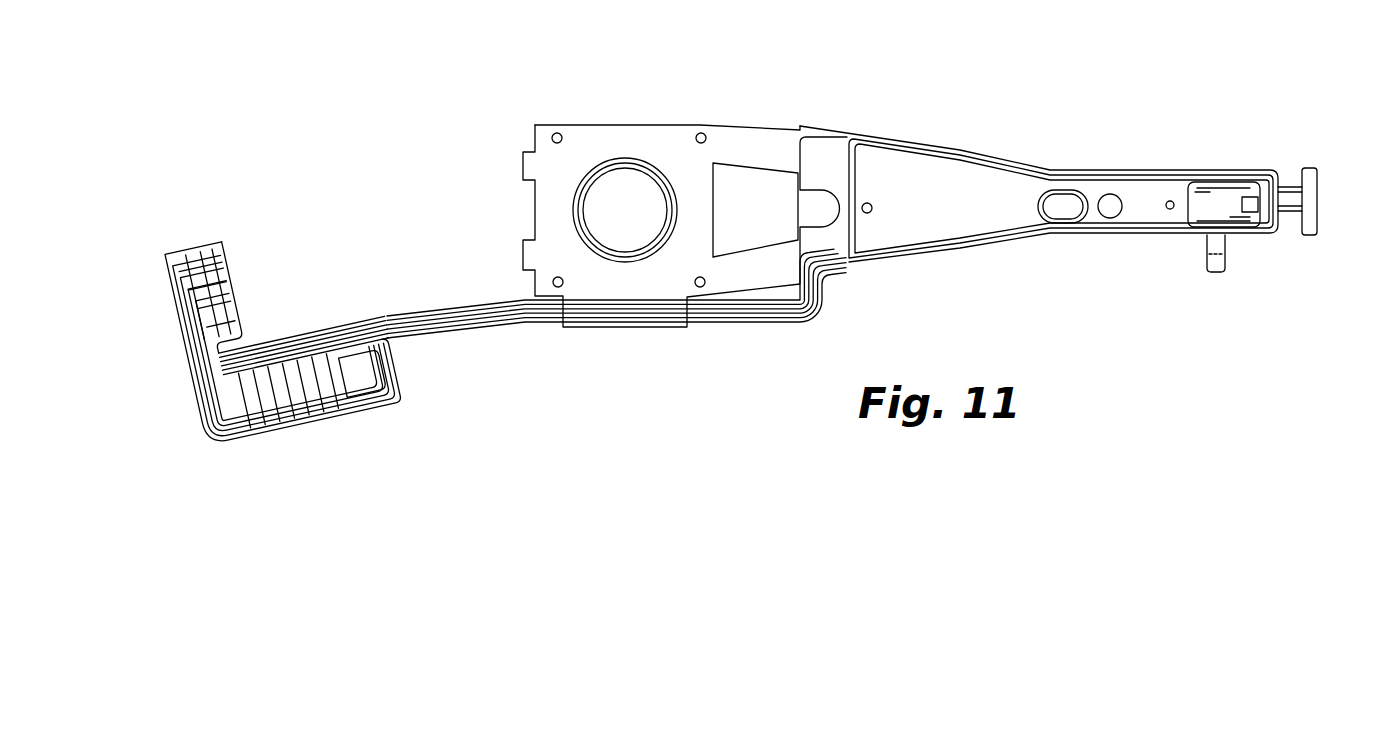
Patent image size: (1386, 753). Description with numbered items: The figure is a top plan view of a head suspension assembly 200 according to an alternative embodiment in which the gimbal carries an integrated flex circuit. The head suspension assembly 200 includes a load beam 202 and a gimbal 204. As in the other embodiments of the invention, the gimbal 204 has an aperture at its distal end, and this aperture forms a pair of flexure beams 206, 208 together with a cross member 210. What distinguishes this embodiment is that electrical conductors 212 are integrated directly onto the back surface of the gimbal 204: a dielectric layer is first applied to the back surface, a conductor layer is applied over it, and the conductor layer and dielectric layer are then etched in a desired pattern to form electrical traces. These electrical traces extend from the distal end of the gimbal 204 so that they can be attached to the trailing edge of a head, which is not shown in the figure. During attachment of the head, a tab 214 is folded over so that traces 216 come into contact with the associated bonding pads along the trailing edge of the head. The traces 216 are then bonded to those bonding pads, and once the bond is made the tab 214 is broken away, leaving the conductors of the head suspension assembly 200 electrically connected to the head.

The head suspension assembly 200 is at (772, 241).
The load beam 202 is at (738, 126).
The gimbal 204 is at (957, 180).
The flexure beam 206 is at (1215, 172).
The flexure beam 208 is at (1242, 237).
The cross member 210 is at (1283, 182).
The electrical conductors 212 is at (455, 298).
The tab 214 is at (1318, 178).
The traces 216 is at (1288, 216).